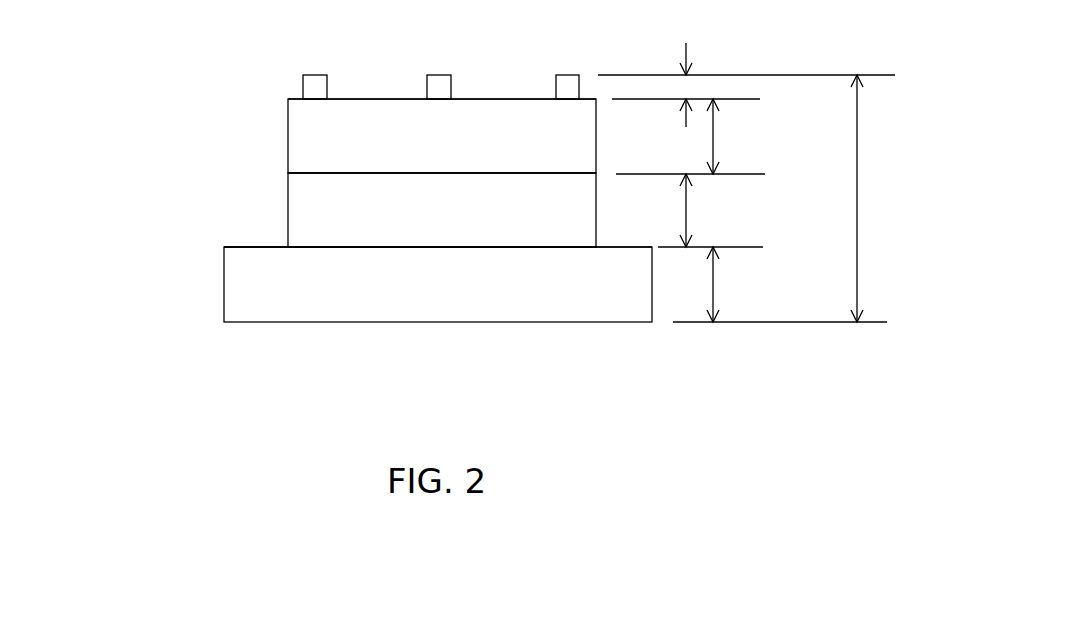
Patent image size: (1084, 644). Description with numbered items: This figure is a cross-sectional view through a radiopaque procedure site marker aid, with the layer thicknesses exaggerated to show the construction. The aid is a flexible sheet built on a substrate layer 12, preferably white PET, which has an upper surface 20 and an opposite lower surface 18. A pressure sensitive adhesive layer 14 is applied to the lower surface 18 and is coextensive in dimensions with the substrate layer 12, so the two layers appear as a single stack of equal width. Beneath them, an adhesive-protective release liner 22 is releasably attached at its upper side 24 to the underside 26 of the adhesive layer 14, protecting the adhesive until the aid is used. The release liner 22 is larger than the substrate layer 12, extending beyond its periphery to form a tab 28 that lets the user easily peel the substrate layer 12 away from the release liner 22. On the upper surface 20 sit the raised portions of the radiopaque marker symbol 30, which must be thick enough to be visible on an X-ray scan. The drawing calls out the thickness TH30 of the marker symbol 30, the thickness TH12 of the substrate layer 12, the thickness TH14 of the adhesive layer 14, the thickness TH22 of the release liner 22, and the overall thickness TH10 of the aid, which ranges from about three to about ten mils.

The substrate layer 12 is at (295, 120).
The pressure sensitive adhesive layer 14 is at (296, 198).
The lower surface 18 is at (302, 173).
The upper surface 20 is at (495, 97).
The release liner 22 is at (230, 290).
The upper side 24 is at (357, 251).
The underside 26 is at (302, 245).
The tab 28 is at (231, 245).
The marker symbol 30 is at (307, 77).
The thickness of the marker symbol TH30 is at (687, 85).
The thickness of the substrate layer TH12 is at (718, 138).
The thickness of the adhesive layer TH14 is at (693, 211).
The thickness of the release liner TH22 is at (722, 281).
The thickness of the procedure site marker aid TH10 is at (863, 175).